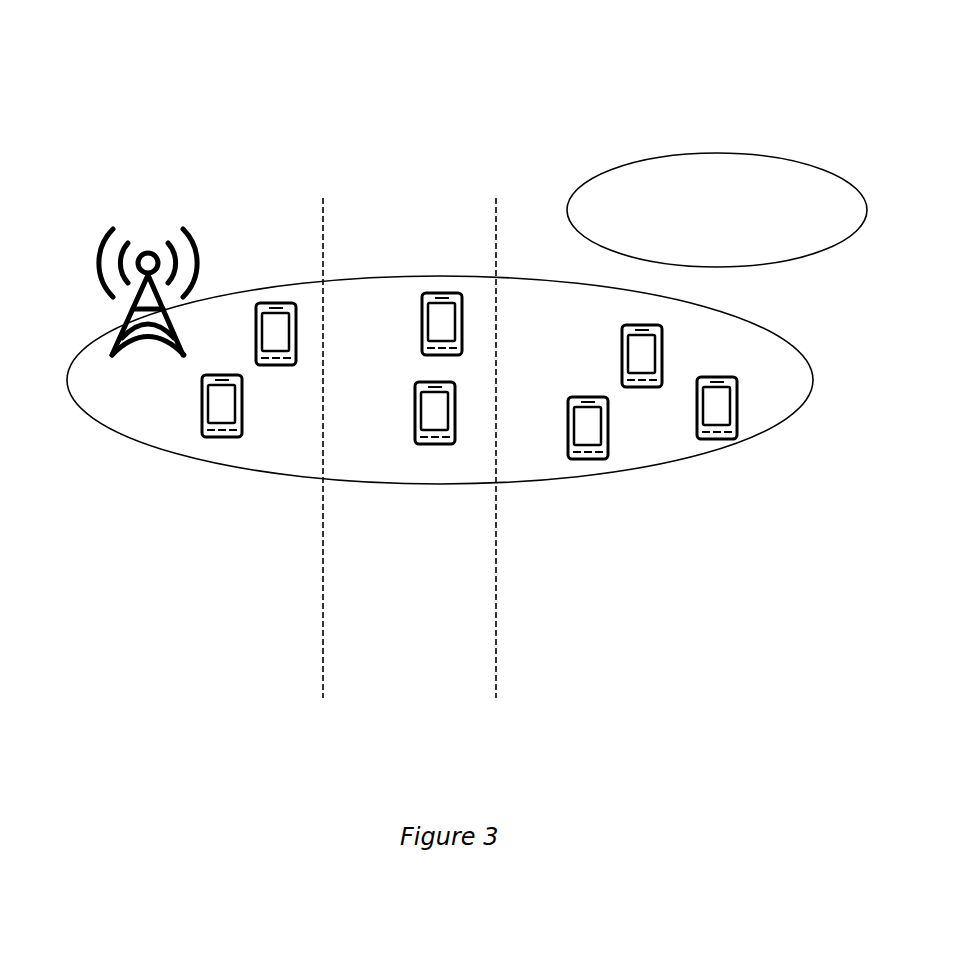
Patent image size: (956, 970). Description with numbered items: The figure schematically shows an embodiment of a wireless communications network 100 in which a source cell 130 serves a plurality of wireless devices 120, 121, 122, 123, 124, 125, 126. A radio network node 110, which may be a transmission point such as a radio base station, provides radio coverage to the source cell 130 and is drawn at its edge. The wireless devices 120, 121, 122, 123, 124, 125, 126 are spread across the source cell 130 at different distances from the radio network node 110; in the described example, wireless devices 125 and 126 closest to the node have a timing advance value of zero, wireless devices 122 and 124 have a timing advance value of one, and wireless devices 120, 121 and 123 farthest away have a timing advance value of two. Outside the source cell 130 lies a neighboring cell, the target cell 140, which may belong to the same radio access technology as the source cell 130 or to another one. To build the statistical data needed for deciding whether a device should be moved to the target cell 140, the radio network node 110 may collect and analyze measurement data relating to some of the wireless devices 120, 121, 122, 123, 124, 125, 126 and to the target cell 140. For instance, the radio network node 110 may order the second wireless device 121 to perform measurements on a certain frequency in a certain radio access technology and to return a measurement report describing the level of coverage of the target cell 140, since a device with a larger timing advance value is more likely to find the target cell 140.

The wireless communications network 100 is at (378, 85).
The radio network node 110 is at (138, 247).
The wireless device 120 is at (696, 412).
The second wireless device 121 is at (621, 342).
The wireless device 122 is at (421, 323).
The wireless device 123 is at (567, 435).
The wireless device 124 is at (414, 418).
The wireless device 125 is at (201, 405).
The wireless device 126 is at (256, 322).
The source cell 130 is at (267, 472).
The target cell 140 is at (835, 212).